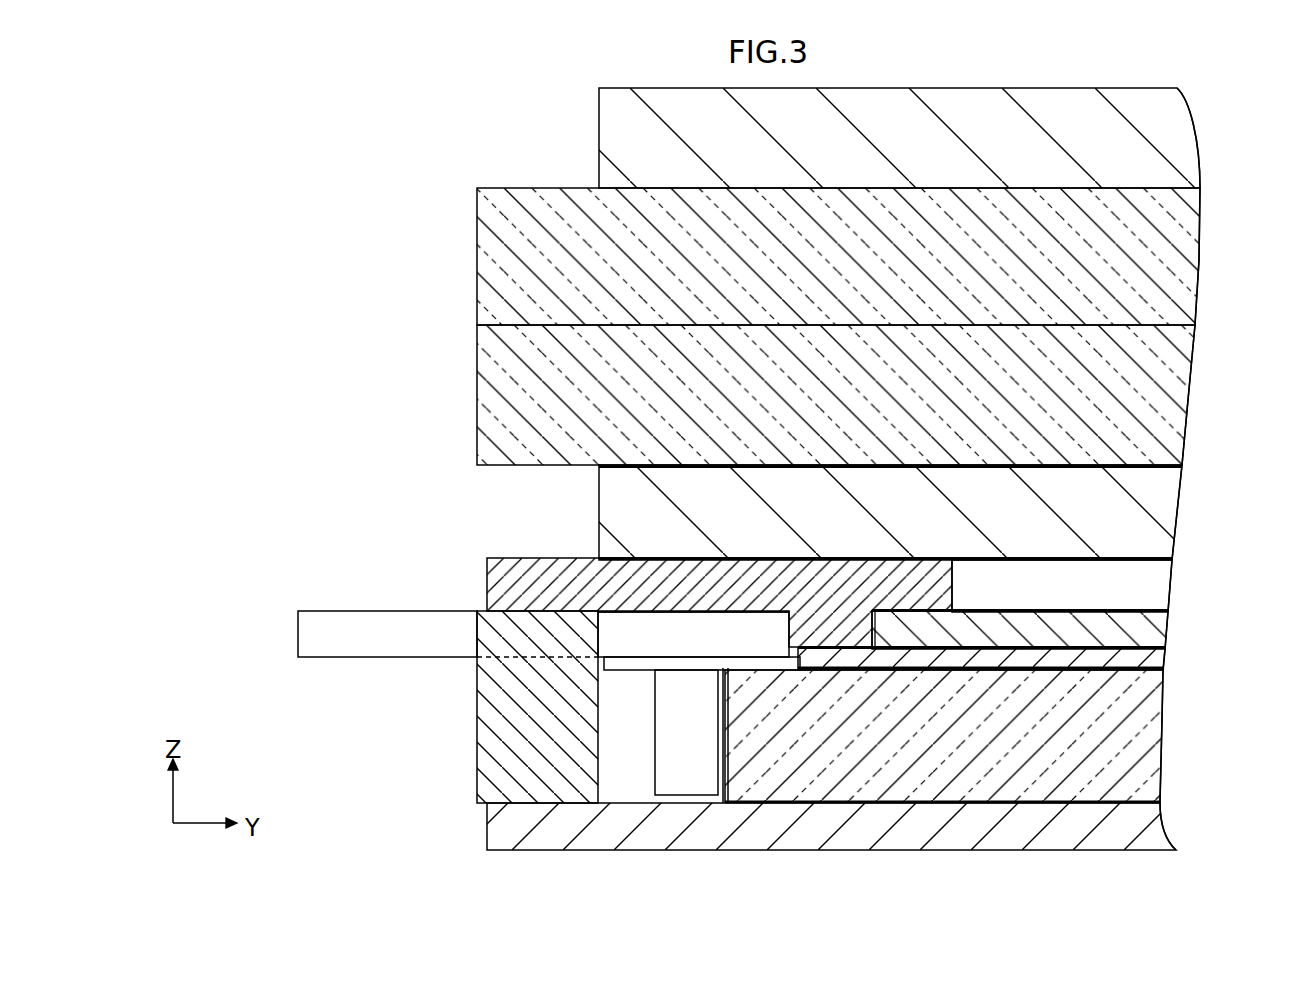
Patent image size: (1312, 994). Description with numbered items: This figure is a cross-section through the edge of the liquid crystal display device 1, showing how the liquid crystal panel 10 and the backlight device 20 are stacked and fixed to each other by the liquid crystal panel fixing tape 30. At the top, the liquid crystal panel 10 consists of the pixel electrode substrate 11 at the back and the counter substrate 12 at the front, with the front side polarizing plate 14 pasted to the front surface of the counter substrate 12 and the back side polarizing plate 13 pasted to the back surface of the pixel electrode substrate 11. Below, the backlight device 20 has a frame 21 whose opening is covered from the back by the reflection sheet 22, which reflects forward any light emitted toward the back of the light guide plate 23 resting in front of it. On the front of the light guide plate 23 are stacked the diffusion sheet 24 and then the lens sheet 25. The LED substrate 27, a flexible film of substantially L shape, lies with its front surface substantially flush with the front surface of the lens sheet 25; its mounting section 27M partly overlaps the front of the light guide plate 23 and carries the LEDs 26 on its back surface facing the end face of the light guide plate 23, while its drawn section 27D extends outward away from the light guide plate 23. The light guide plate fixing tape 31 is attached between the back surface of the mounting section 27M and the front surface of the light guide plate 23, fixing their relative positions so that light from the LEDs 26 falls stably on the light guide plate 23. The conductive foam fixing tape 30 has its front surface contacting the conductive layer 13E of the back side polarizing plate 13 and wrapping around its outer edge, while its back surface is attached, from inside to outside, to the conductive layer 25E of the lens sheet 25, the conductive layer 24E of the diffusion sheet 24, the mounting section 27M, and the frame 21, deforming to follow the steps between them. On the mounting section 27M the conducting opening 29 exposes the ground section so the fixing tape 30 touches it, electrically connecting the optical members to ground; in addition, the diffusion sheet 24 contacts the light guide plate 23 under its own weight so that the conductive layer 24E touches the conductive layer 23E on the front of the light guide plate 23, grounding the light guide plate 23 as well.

The liquid crystal display device 1 is at (1185, 66).
The liquid crystal panel 10 is at (784, 350).
The pixel electrode substrate 11 is at (495, 392).
The counter substrate 12 is at (505, 263).
The back side polarizing plate 13 is at (630, 512).
The conductive layer of the back side polarizing plate 13E is at (1118, 556).
The front side polarizing plate 14 is at (625, 132).
The backlight device 20 is at (787, 774).
The frame 21 is at (493, 762).
The reflection sheet 22 is at (533, 828).
The light guide plate 23 is at (815, 787).
The conductive layer of the light guide plate 23E is at (1117, 673).
The diffusion sheet 24 is at (958, 657).
The conductive layer of the diffusion sheet 24E is at (1118, 656).
The lens sheet 25 is at (1055, 628).
The conductive layer of the lens sheet 25E is at (1198, 622).
The LED 26 is at (685, 780).
The LED substrate 27 is at (543, 754).
The drawn section 27D is at (345, 657).
The mounting section 27M is at (618, 642).
The conducting opening 29 is at (628, 610).
The liquid crystal panel fixing tape 30 is at (517, 577).
The light guide plate fixing tape 31 is at (665, 662).